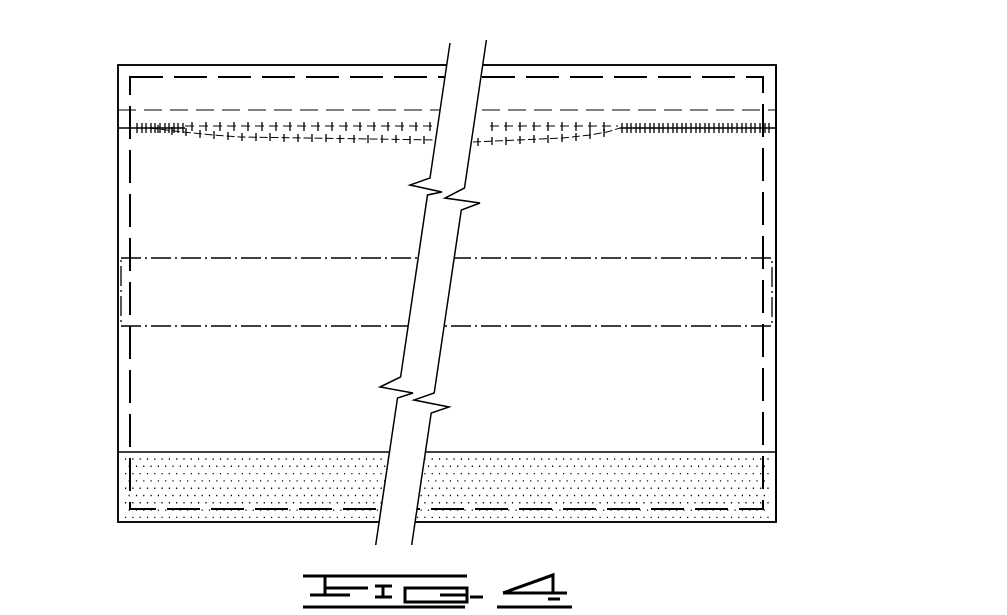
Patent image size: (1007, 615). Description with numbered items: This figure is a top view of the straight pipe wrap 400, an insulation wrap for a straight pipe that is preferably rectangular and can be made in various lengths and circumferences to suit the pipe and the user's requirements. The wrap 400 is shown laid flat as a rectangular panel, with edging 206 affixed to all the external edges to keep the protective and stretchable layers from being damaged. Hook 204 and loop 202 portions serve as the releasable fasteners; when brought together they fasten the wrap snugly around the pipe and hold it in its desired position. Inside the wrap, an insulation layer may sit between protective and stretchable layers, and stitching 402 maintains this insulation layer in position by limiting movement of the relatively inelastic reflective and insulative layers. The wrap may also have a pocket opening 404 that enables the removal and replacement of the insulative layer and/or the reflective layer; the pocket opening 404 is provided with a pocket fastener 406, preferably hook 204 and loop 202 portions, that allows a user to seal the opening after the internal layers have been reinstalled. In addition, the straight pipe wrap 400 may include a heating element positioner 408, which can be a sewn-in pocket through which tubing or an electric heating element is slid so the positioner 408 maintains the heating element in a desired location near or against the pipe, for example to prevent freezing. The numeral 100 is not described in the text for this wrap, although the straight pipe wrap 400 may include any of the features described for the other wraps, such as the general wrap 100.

The straight pipe wrap 400 is at (766, 44).
The airbag cushion 100 is at (652, 391).
The edging 206 is at (776, 96).
The hook 204 is at (223, 98).
The loop 202 is at (720, 488).
The stitching 402 is at (127, 402).
The pocket opening 404 is at (533, 130).
The pocket fastener 406 is at (146, 137).
The heating element positioner 408 is at (180, 310).